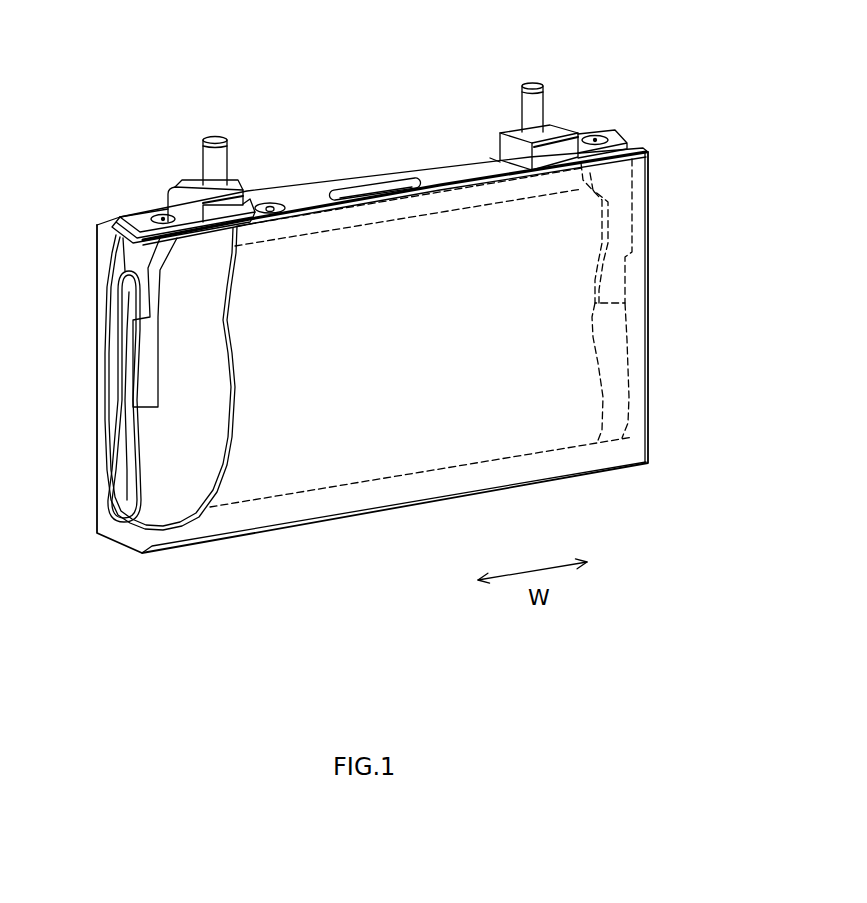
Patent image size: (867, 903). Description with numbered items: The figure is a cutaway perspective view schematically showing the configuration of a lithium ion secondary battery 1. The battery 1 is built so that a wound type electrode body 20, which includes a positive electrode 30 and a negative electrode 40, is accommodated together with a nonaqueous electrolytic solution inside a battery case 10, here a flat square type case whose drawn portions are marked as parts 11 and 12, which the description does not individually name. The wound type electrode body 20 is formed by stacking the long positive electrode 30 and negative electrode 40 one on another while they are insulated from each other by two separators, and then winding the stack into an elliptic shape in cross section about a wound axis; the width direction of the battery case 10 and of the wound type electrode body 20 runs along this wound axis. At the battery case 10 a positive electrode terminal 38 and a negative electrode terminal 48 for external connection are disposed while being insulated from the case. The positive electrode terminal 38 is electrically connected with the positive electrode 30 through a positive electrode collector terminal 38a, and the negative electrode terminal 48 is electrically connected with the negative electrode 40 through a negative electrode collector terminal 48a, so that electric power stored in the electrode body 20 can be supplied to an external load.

The lithium ion secondary battery 1 is at (399, 289).
The battery case 10 is at (435, 339).
The case body (can) 11 is at (648, 184).
The cap plate (lid) 12 is at (644, 151).
The wound type electrode body 20 is at (570, 360).
The positive electrode 30 is at (147, 448).
The positive electrode terminal 38 is at (217, 132).
The positive electrode collector terminal 38a is at (150, 365).
The negative electrode 40 is at (612, 402).
The negative electrode terminal 48 is at (533, 78).
The negative electrode collector terminal 48a is at (610, 287).